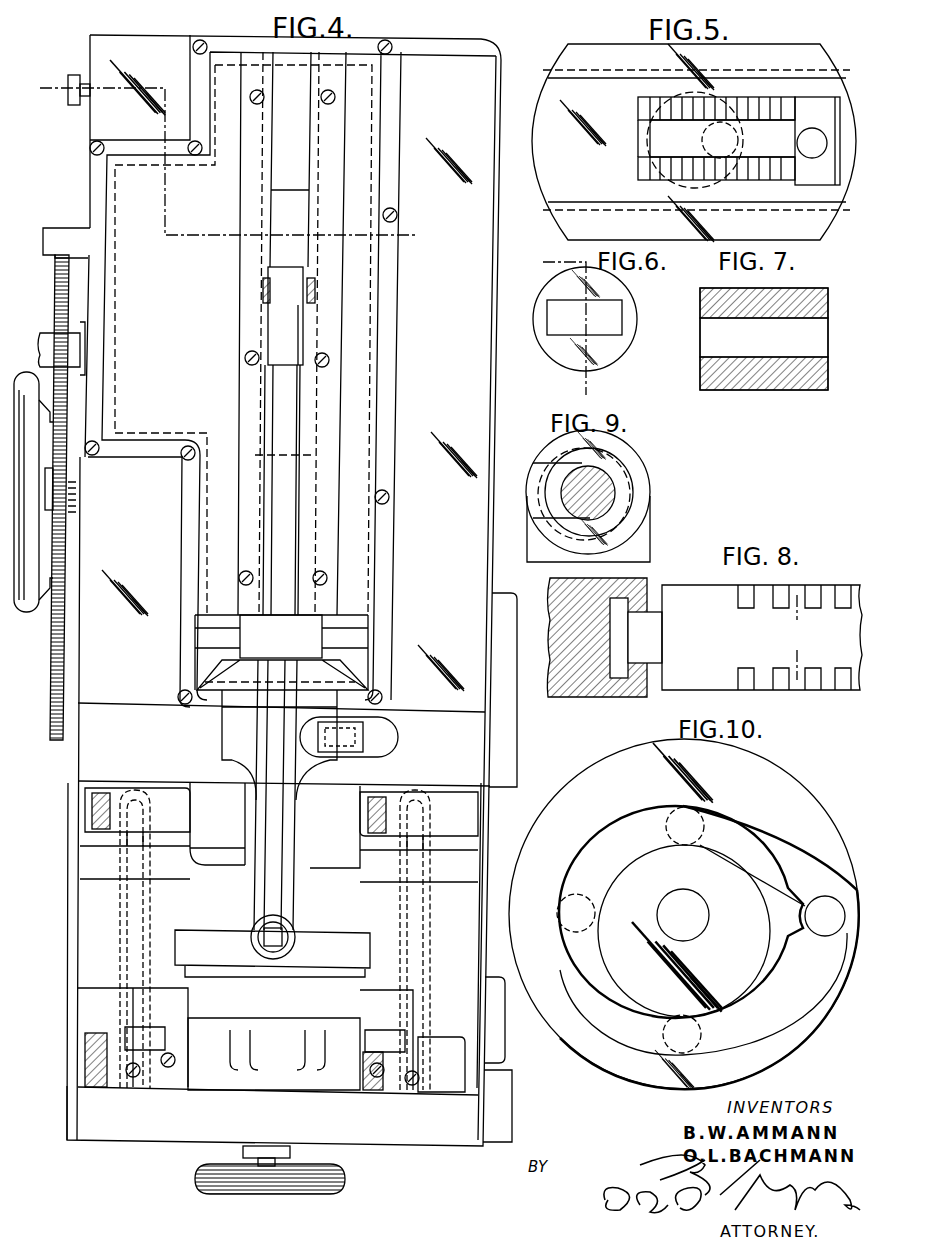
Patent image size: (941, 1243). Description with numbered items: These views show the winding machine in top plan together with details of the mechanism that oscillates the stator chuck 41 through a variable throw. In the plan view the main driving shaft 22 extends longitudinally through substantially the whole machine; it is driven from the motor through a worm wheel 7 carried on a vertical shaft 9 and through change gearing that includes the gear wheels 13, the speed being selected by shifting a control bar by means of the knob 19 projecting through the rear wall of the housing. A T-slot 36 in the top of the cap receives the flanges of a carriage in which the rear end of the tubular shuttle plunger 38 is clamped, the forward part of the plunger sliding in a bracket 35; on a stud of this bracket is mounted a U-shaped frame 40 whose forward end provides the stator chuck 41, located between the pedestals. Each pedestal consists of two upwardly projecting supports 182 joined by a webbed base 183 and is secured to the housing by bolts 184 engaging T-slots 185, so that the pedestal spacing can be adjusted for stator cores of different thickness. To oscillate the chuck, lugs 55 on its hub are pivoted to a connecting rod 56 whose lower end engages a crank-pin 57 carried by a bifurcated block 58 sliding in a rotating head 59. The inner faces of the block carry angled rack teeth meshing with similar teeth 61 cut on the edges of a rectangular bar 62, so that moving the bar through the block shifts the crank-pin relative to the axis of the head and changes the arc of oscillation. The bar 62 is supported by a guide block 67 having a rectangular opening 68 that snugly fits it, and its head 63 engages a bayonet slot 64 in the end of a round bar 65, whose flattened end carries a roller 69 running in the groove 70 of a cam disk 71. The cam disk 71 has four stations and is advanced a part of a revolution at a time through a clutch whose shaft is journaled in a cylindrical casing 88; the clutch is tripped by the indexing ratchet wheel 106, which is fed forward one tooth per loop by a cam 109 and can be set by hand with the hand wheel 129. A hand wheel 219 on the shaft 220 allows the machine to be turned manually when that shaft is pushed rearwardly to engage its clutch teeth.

In FIG. 4, the main driving shaft 22 is at (57, 108).
In FIG. 4, the knob 19 is at (76, 105).
In FIG. 4, the T-slot 36 is at (265, 175).
In FIG. 4, the cam 109 is at (60, 241).
In FIG. 4, the cylindrical casing 88 is at (64, 346).
In FIG. 4, the crank-pin 57 is at (288, 338).
In FIG. 5, the crank-pin 57 is at (818, 145).
In FIG. 4, the shuttle plunger 38 is at (288, 413).
In FIG. 4, the hand wheel 129 is at (32, 546).
In FIG. 4, the indexing ratchet wheel 106 is at (50, 652).
In FIG. 4, the bracket 35 is at (345, 631).
In FIG. 4, the U-shaped frame 40 is at (232, 737).
In FIG. 4, the lugs 55 is at (385, 727).
In FIG. 4, the connecting rod 56 is at (380, 746).
In FIG. 4, the webbed base 183 is at (274, 936).
In FIG. 4, the supports 182 is at (105, 848).
In FIG. 4, the T-slots 185 is at (135, 936).
In FIG. 4, the stator chuck 41 is at (272, 942).
In FIG. 4, the bolts 184 is at (130, 1074).
In FIG. 4, the shaft 220 is at (292, 1163).
In FIG. 4, the hand wheel 219 is at (205, 1178).
In FIG. 5, the gear wheels 13 is at (548, 67).
In FIG. 5, the head 59 is at (800, 57).
In FIG. 5, the rectangular bar 62 is at (672, 138).
In FIG. 8, the rectangular bar 62 is at (762, 637).
In FIG. 5, the guide block 67 is at (652, 148).
In FIG. 6, the guide block 67 is at (560, 290).
In FIG. 7, the guide block 67 is at (700, 302).
In FIG. 5, the bifurcated block 58 is at (722, 160).
In FIG. 6, the worm wheel 7 is at (560, 325).
In FIG. 6, the rectangular opening 68 is at (573, 326).
In FIG. 7, the rectangular opening 68 is at (810, 333).
In FIG. 9, the bayonet slot 64 is at (553, 461).
In FIG. 9, the head 63 is at (558, 487).
In FIG. 8, the head 63 is at (620, 670).
In FIG. 9, the round bar 65 is at (645, 486).
In FIG. 8, the round bar 65 is at (592, 680).
In FIG. 8, the vertical shaft 9 is at (697, 557).
In FIG. 8, the rack teeth 61 is at (794, 637).
In FIG. 10, the roller 69 is at (823, 912).
In FIG. 10, the groove 70 is at (785, 878).
In FIG. 10, the cam disk 71 is at (708, 912).